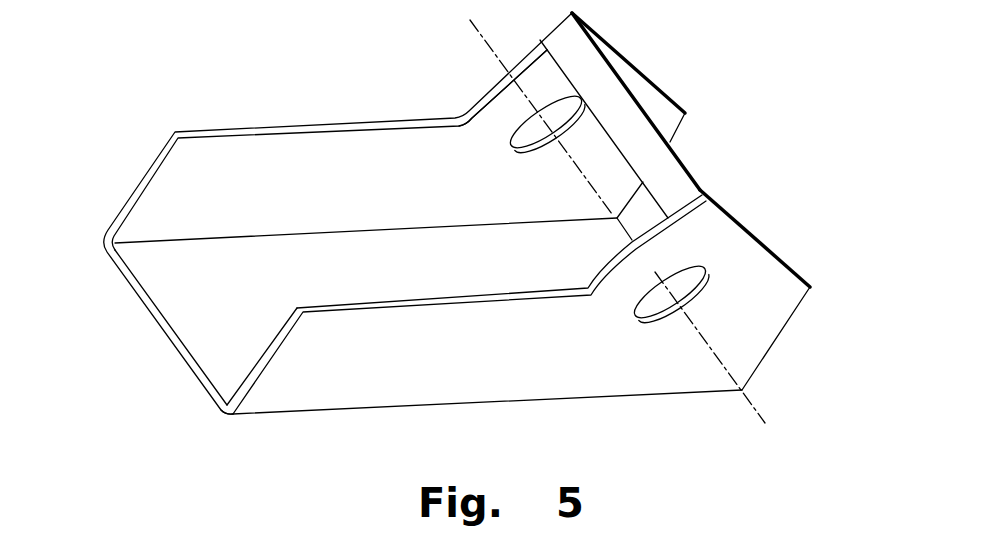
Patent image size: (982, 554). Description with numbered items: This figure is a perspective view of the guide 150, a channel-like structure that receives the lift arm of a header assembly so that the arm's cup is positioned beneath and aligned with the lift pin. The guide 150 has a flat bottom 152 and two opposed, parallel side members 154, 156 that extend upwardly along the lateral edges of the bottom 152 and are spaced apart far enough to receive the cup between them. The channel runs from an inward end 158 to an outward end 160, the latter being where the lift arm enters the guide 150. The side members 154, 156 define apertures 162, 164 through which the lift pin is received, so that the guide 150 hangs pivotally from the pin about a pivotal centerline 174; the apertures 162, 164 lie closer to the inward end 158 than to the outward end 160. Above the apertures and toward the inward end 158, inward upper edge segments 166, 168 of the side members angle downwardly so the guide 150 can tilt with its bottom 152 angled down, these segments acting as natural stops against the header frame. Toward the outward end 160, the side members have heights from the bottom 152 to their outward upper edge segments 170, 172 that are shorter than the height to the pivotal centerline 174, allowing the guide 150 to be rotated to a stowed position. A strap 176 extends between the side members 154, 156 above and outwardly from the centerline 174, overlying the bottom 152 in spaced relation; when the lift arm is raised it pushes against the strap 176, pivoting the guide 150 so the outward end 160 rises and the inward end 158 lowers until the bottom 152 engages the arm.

The guide 150 is at (217, 95).
The bottom 152 is at (170, 338).
The side member 154 is at (140, 190).
The side member 156 is at (271, 357).
The inward end 158 is at (735, 403).
The outward end 160 is at (195, 407).
The aperture 162 is at (560, 103).
The aperture 164 is at (690, 275).
The inward upper edge segment 166 is at (663, 88).
The inward upper edge segment 168 is at (780, 252).
The outward upper edge segment 170 is at (367, 128).
The outward upper edge segment 172 is at (420, 302).
The pivotal centerline 174 is at (478, 35).
The strap 176 is at (670, 168).